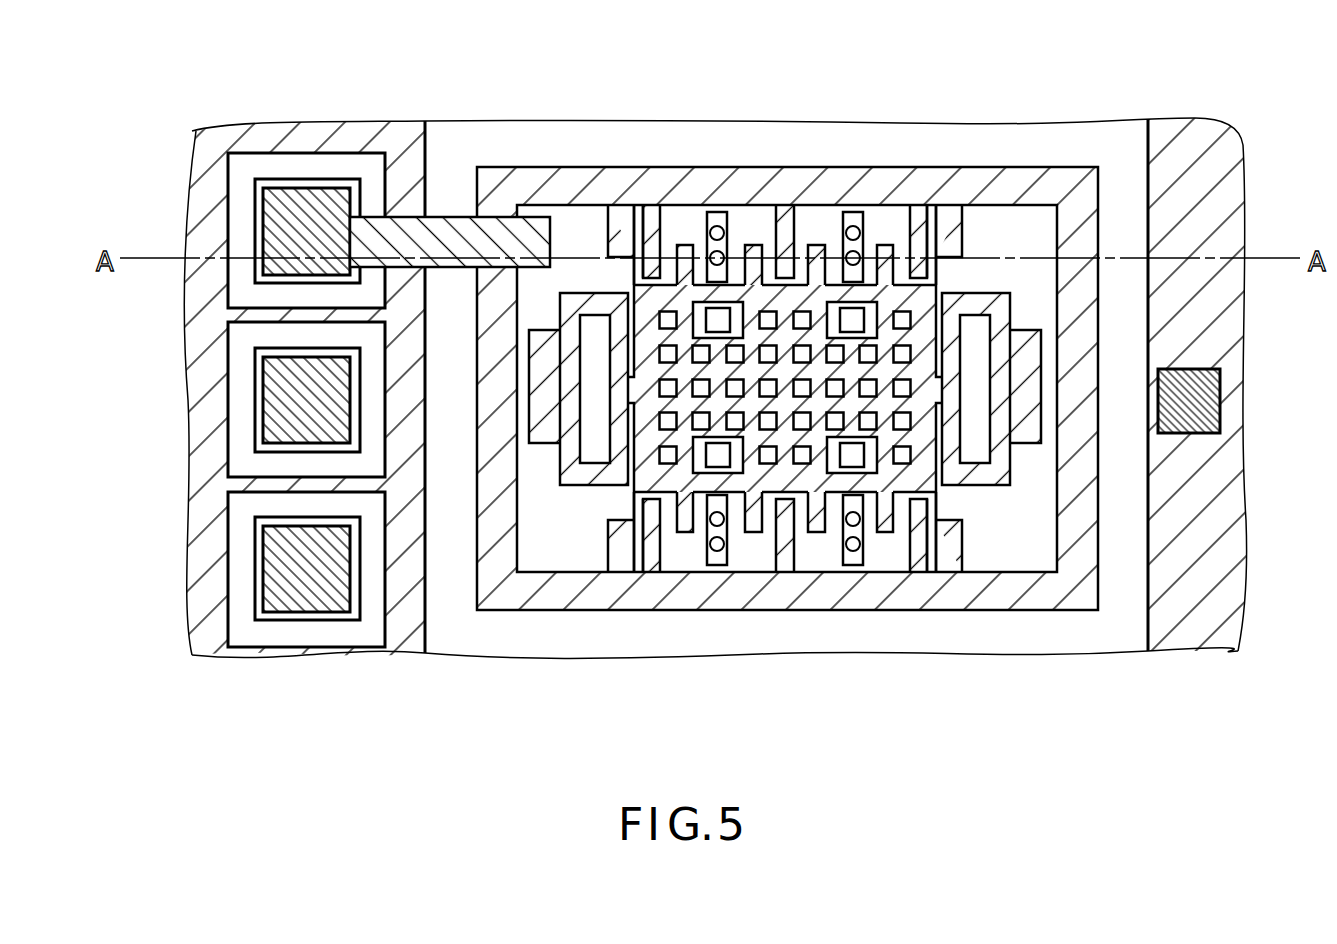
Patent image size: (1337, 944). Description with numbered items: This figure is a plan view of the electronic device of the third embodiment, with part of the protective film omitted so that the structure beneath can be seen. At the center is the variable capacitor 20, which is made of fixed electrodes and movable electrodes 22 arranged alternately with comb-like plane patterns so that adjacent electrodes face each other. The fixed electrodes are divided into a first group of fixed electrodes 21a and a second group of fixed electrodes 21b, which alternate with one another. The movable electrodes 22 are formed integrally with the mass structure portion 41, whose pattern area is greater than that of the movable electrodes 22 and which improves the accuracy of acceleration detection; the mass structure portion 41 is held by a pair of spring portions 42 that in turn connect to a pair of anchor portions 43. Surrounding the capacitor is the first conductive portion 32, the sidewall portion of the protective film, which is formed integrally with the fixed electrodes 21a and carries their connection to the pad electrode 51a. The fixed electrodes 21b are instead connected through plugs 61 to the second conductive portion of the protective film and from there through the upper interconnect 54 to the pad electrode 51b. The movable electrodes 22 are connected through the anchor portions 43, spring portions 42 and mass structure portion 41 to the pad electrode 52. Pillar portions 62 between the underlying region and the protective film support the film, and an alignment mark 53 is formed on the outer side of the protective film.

The variable capacitor 20 is at (942, 64).
The fixed electrodes of the first group 21a is at (652, 205).
The fixed electrodes of the second group 21b is at (717, 212).
The movable electrodes 22 is at (685, 245).
The first conductive portion 32 is at (1085, 578).
The mass structure portion 41 is at (940, 272).
The spring portions 42 is at (588, 280).
The anchor portions 43 is at (545, 345).
The pad electrode 51a is at (275, 398).
The pad electrode 51b is at (275, 215).
The pad electrode 52 is at (275, 568).
The alignment mark 53 is at (1212, 393).
The upper interconnect 54 is at (400, 240).
The plugs 61 is at (940, 288).
The pillar portions 62 is at (705, 452).